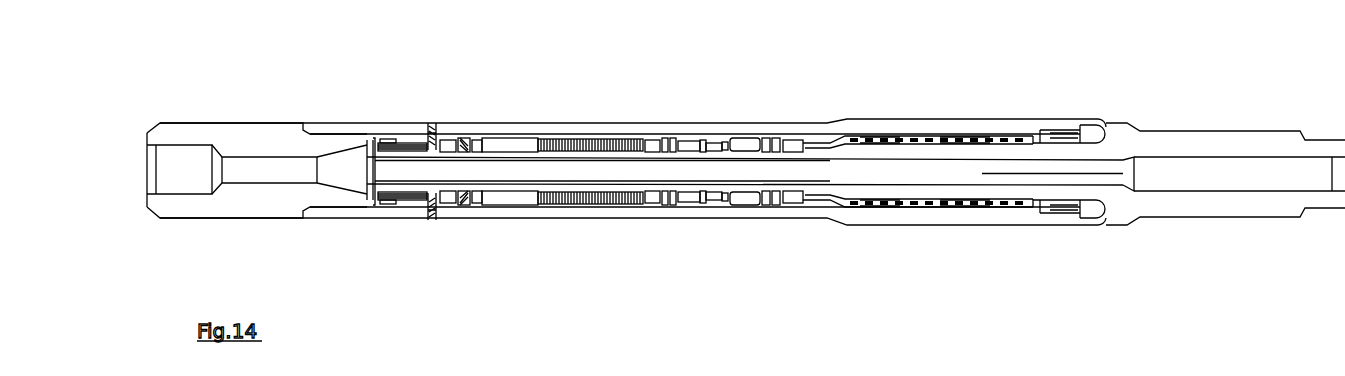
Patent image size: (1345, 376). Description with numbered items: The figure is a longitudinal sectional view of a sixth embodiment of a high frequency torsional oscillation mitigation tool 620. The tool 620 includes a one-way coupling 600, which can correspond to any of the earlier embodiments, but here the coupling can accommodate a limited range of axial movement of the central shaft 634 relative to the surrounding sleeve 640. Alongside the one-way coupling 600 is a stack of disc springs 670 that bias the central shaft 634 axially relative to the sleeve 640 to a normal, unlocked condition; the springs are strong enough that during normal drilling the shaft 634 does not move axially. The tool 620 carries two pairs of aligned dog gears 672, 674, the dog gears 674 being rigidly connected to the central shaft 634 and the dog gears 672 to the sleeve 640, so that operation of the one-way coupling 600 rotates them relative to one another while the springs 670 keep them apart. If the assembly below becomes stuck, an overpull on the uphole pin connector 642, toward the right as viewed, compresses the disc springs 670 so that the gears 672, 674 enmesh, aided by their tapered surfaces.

The one-way coupling 600 is at (913, 112).
The mitigation tool 620 is at (203, 268).
The central shaft 634 is at (1020, 193).
The surrounding sleeve 640 is at (390, 132).
The uphole pin connector 642 is at (1327, 142).
The disc springs 670 is at (586, 129).
The dog gears 672 is at (722, 202).
The dog gears 674 is at (712, 150).